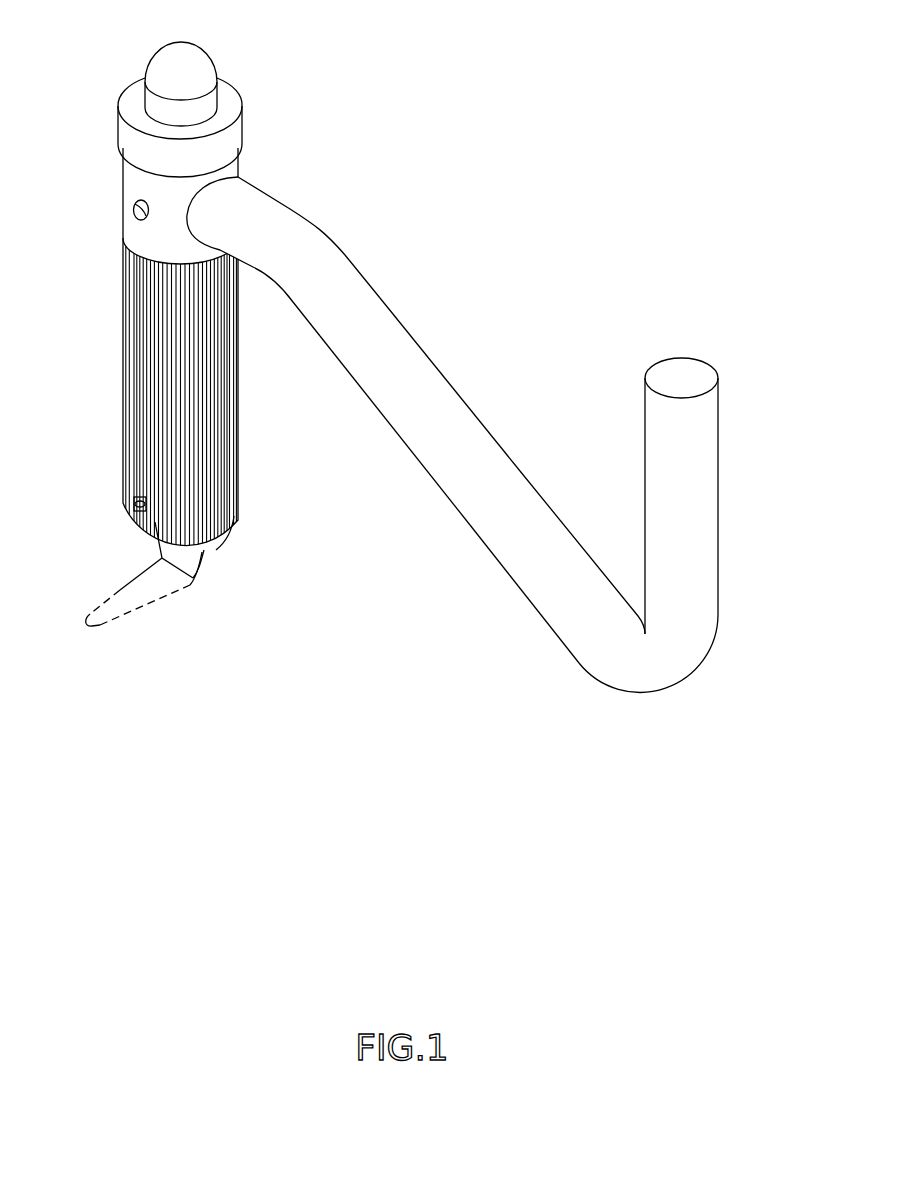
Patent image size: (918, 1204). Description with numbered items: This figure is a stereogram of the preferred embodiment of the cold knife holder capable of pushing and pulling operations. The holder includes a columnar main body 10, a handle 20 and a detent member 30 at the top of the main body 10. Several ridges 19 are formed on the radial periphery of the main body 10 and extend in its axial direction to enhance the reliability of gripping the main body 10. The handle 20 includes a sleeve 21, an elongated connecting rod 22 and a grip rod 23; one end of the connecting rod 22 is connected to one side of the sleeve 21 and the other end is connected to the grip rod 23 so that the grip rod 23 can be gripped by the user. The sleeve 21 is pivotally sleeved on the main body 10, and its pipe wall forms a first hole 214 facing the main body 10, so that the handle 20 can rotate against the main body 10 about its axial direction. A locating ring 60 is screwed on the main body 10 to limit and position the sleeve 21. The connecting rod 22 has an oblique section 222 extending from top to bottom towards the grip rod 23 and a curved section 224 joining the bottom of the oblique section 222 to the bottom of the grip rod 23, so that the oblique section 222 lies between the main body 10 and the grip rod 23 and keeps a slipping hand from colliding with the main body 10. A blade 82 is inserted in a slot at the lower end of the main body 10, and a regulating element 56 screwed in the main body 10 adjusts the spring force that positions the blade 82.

The main body 10 is at (115, 343).
The ridges 19 is at (233, 537).
The handle 20 is at (526, 303).
The sleeve 21 is at (240, 168).
The connecting rod 22 is at (505, 583).
The grip rod 23 is at (718, 497).
The detent member 30 is at (212, 52).
The regulating element 56 is at (133, 508).
The locating ring 60 is at (243, 123).
The blade 82 is at (147, 603).
The first hole 214 is at (132, 210).
The oblique section 222 is at (442, 493).
The curved section 224 is at (657, 693).